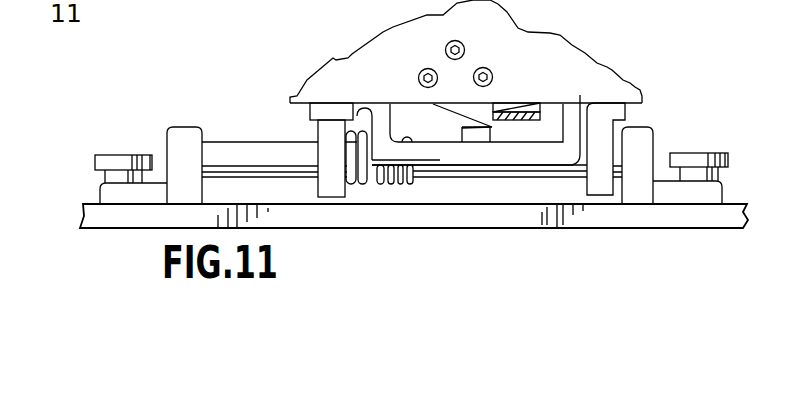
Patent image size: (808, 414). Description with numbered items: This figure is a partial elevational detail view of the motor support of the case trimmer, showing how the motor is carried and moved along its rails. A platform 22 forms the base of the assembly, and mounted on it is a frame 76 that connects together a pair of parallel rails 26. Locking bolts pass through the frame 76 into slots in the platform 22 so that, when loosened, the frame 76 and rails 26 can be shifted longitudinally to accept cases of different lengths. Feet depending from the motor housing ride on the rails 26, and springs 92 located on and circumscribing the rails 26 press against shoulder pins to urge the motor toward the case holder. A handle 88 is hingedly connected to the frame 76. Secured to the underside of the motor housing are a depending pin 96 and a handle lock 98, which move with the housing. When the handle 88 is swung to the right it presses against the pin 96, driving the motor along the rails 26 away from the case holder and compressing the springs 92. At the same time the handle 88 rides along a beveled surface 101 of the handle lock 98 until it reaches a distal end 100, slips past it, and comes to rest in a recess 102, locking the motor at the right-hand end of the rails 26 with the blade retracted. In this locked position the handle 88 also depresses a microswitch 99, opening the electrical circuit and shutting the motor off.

The platform 22 is at (734, 203).
The rails 26 is at (246, 142).
The frame 76 is at (182, 127).
The handle 88 is at (563, 142).
The springs 92 is at (378, 196).
The depending pin 96 is at (462, 130).
The handle lock 98 is at (433, 104).
The microswitch 99 is at (503, 100).
The distal end 100 is at (503, 124).
The beveled surface 101 is at (462, 108).
The recess 102 is at (467, 100).